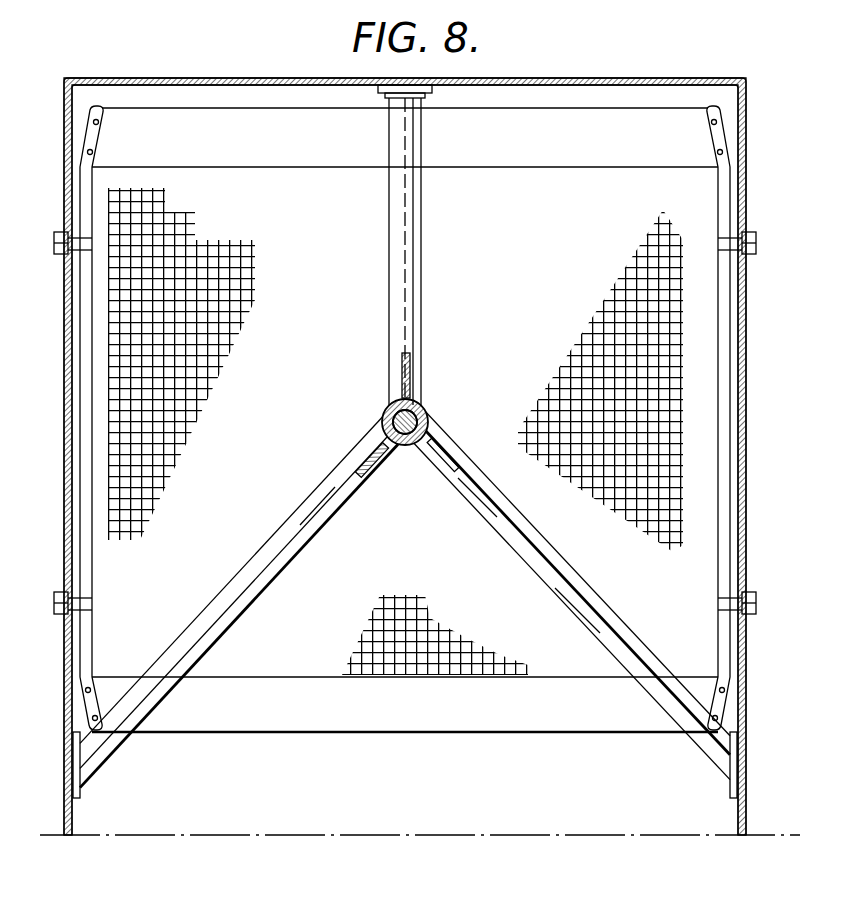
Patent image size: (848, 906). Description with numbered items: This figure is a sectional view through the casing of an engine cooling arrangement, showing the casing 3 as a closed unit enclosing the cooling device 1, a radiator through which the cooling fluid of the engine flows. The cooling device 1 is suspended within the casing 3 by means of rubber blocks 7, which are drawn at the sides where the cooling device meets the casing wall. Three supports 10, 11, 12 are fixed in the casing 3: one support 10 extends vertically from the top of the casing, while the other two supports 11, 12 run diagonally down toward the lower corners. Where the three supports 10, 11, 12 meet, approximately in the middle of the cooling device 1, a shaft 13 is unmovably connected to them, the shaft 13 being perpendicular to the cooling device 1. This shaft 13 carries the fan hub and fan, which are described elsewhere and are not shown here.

The cooling device 1 is at (136, 128).
The casing 3 is at (645, 79).
The rubber blocks 7 is at (68, 234).
The support 10 is at (402, 232).
The support 11 is at (524, 536).
The support 12 is at (306, 518).
The shaft 13 is at (390, 410).